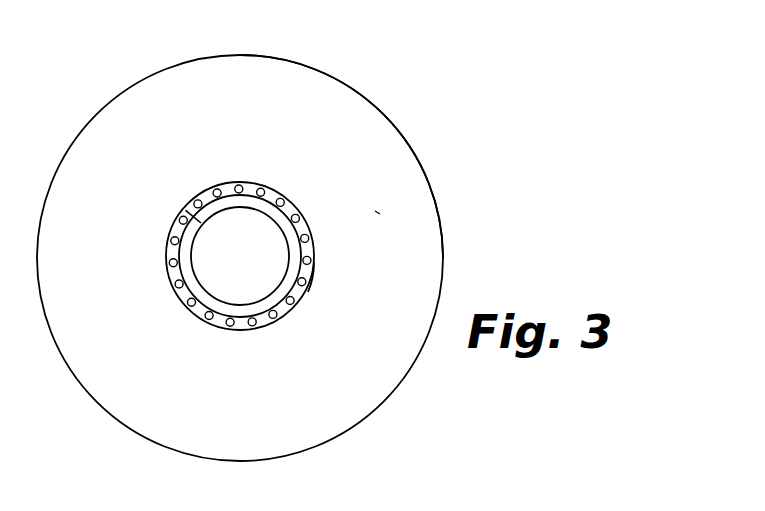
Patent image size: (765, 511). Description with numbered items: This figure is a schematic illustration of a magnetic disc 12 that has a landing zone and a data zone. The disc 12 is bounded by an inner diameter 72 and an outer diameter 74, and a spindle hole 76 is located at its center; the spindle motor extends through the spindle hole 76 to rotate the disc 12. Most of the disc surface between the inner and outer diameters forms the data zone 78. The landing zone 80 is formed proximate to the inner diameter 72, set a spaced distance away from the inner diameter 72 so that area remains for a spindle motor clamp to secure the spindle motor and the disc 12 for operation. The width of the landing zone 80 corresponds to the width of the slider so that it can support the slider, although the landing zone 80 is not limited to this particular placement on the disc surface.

The disc 12 is at (407, 117).
The inner diameter 72 is at (192, 207).
The outer diameter 74 is at (423, 166).
The spindle hole 76 is at (246, 271).
The data zone 78 is at (382, 212).
The landing zone 80 is at (322, 277).